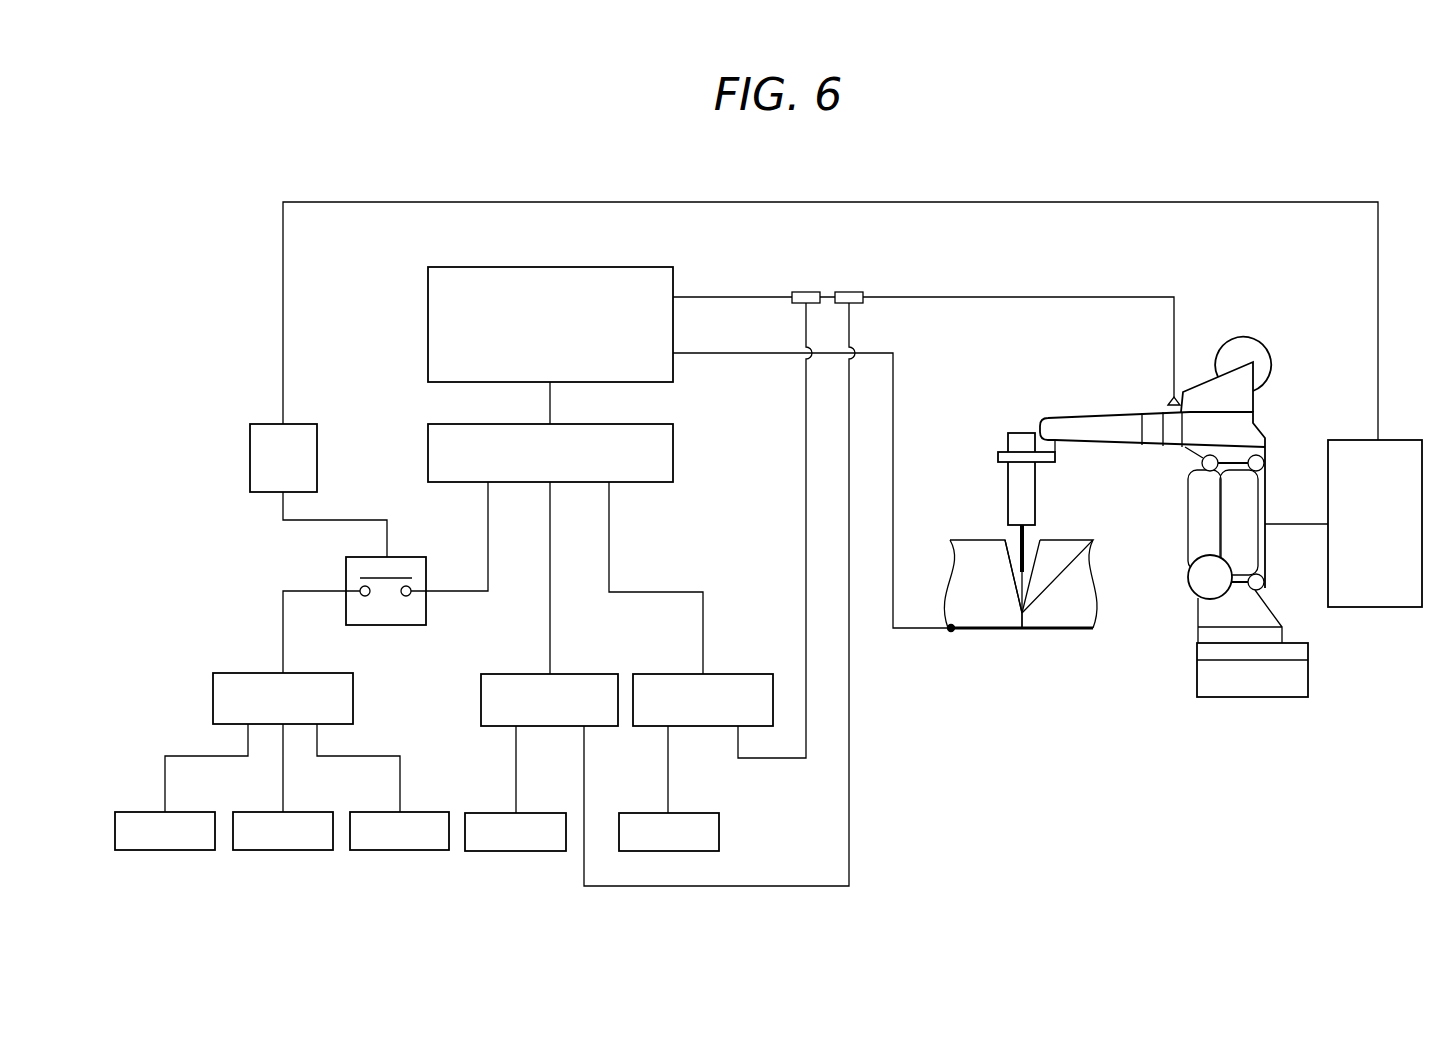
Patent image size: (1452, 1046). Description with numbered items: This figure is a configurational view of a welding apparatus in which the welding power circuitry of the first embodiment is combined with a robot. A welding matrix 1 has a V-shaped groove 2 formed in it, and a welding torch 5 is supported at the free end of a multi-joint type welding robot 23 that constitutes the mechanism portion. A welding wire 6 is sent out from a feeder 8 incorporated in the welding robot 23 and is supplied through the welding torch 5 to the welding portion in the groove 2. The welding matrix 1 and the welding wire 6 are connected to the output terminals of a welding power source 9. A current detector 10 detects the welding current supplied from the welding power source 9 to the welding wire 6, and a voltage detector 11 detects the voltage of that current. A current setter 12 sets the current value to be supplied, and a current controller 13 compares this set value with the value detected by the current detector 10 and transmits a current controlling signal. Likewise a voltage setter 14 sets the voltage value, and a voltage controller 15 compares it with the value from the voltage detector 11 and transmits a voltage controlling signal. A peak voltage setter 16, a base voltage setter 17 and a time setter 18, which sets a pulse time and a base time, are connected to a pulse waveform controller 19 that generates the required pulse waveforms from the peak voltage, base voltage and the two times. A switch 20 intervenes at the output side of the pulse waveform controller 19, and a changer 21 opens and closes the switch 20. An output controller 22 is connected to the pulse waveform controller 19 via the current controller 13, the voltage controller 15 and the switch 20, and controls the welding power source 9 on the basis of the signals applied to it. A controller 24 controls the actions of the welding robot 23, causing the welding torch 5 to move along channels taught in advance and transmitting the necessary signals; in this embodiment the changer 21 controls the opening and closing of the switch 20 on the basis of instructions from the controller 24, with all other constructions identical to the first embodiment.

The welding matrix 1 is at (1084, 570).
The V-shaped groove 2 is at (1007, 562).
The welding torch 5 is at (1008, 492).
The welding wire 6 is at (1027, 540).
The feeder 8 is at (1237, 338).
The welding power source 9 is at (549, 267).
The current detector 10 is at (811, 292).
The voltage detector 11 is at (855, 292).
The current setter 12 is at (684, 813).
The current controller 13 is at (738, 674).
The voltage setter 14 is at (530, 813).
The voltage controller 15 is at (583, 674).
The peak voltage setter 16 is at (180, 812).
The base voltage setter 17 is at (298, 812).
The time setter 18 is at (413, 812).
The pulse waveform controller 19 is at (318, 673).
The switch 20 is at (406, 557).
The changer 21 is at (317, 455).
The output controller 22 is at (673, 452).
The welding robot 23 is at (1202, 494).
The controller 24 is at (1400, 440).